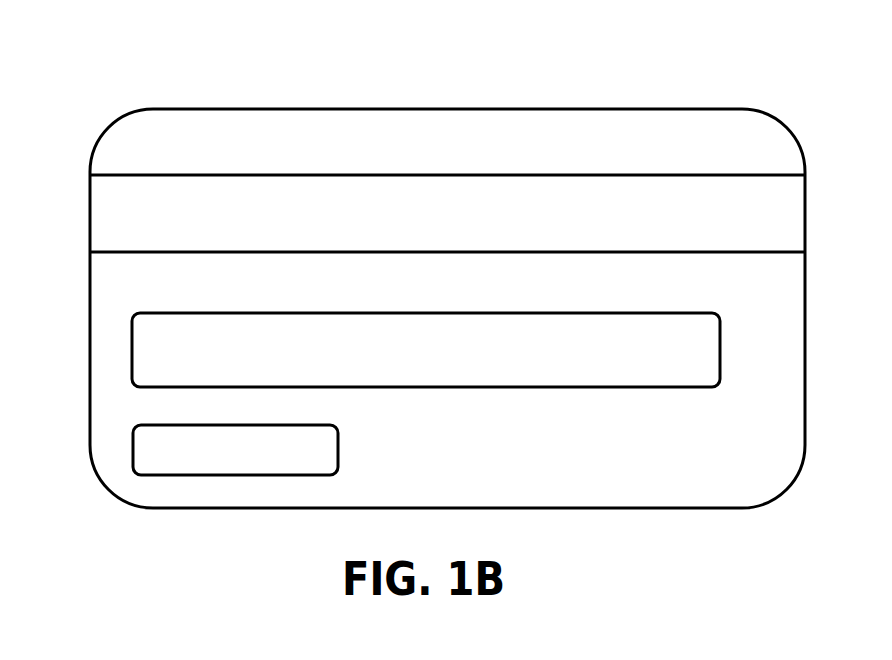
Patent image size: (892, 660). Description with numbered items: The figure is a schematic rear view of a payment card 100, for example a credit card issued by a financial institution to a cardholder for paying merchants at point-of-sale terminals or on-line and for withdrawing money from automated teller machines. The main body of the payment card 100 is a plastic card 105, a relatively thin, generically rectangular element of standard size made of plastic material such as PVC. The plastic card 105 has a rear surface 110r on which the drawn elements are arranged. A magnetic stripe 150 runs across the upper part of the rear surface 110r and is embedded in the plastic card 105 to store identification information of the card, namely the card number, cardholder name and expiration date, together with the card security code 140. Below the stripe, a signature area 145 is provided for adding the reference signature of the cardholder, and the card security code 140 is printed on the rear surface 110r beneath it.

The payment card 100 is at (421, 273).
The plastic card 105 is at (447, 124).
The rear surface 110r is at (720, 156).
The magnetic stripe 150 is at (447, 198).
The signature area 145 is at (426, 374).
The card security code 140 is at (281, 444).